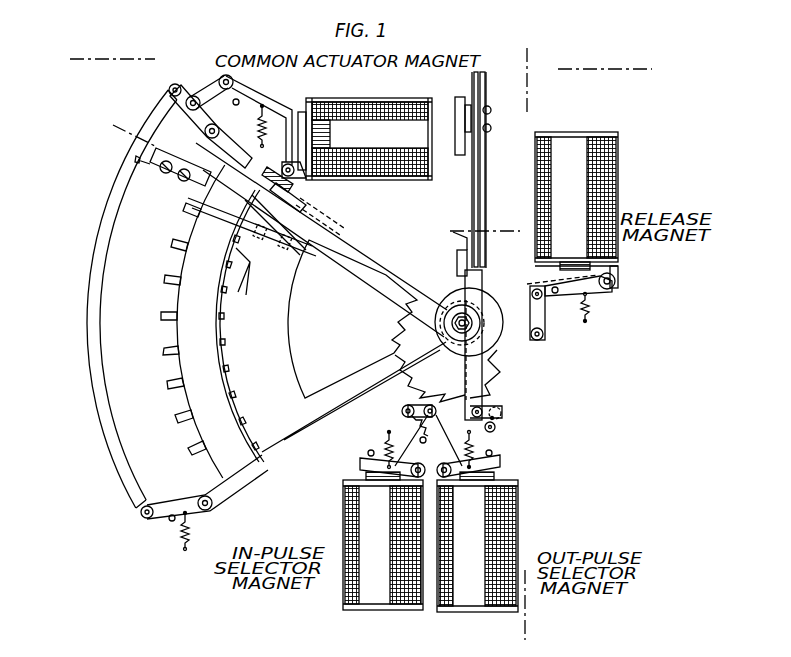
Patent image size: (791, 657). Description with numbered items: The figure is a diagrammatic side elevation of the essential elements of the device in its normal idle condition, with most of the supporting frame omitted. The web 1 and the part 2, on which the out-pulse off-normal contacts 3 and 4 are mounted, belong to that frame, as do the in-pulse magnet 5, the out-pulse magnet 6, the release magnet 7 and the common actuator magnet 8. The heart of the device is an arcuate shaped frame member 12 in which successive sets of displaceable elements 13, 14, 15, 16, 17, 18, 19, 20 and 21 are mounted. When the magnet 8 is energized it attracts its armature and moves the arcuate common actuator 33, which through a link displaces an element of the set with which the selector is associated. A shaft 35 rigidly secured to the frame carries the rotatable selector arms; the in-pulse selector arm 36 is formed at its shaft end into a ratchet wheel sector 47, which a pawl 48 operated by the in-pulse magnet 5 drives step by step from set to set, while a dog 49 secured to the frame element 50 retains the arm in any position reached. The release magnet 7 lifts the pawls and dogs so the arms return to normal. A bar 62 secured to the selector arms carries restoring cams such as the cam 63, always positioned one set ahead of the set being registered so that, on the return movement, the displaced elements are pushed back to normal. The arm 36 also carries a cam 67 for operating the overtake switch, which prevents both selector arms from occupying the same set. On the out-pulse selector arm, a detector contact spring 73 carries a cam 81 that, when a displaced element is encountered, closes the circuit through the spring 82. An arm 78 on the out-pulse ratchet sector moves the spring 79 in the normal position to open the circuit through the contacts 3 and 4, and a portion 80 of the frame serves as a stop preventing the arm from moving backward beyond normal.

The web 1 is at (297, 392).
The frame part 2 is at (84, 52).
The contact 3 is at (123, 124).
The contact 4 is at (545, 55).
The in-pulse magnet 5 is at (343, 536).
The out-pulse magnet 6 is at (516, 531).
The release magnet 7 is at (617, 205).
The magnet 8 is at (374, 106).
The arcuate shaped frame member 12 is at (220, 457).
The set of displaceable elements 13 is at (213, 172).
The set of displaceable elements 14 is at (183, 213).
The set of displaceable elements 15 is at (172, 245).
The set of displaceable elements 16 is at (165, 280).
The set of displaceable elements 17 is at (162, 315).
The set of displaceable elements 18 is at (164, 351).
The set of displaceable elements 19 is at (168, 385).
The set of displaceable elements 20 is at (177, 419).
The set of displaceable elements 21 is at (190, 451).
The arcuate common actuator 33 is at (95, 281).
The shaft 35 is at (467, 327).
The in-pulse selector arm 36 is at (245, 215).
The ratchet wheel sector 47 is at (418, 372).
The pawl 48 is at (442, 378).
The dog 49 is at (486, 393).
The frame element 50 is at (501, 411).
The bar 62 is at (280, 262).
The cam 63 is at (244, 266).
The cam 67 is at (192, 170).
The spring 73 is at (292, 187).
The arm 78 is at (457, 268).
The spring 79 is at (472, 200).
The frame portion 80 is at (482, 275).
The cam 81 is at (270, 178).
The spring 82 is at (310, 211).